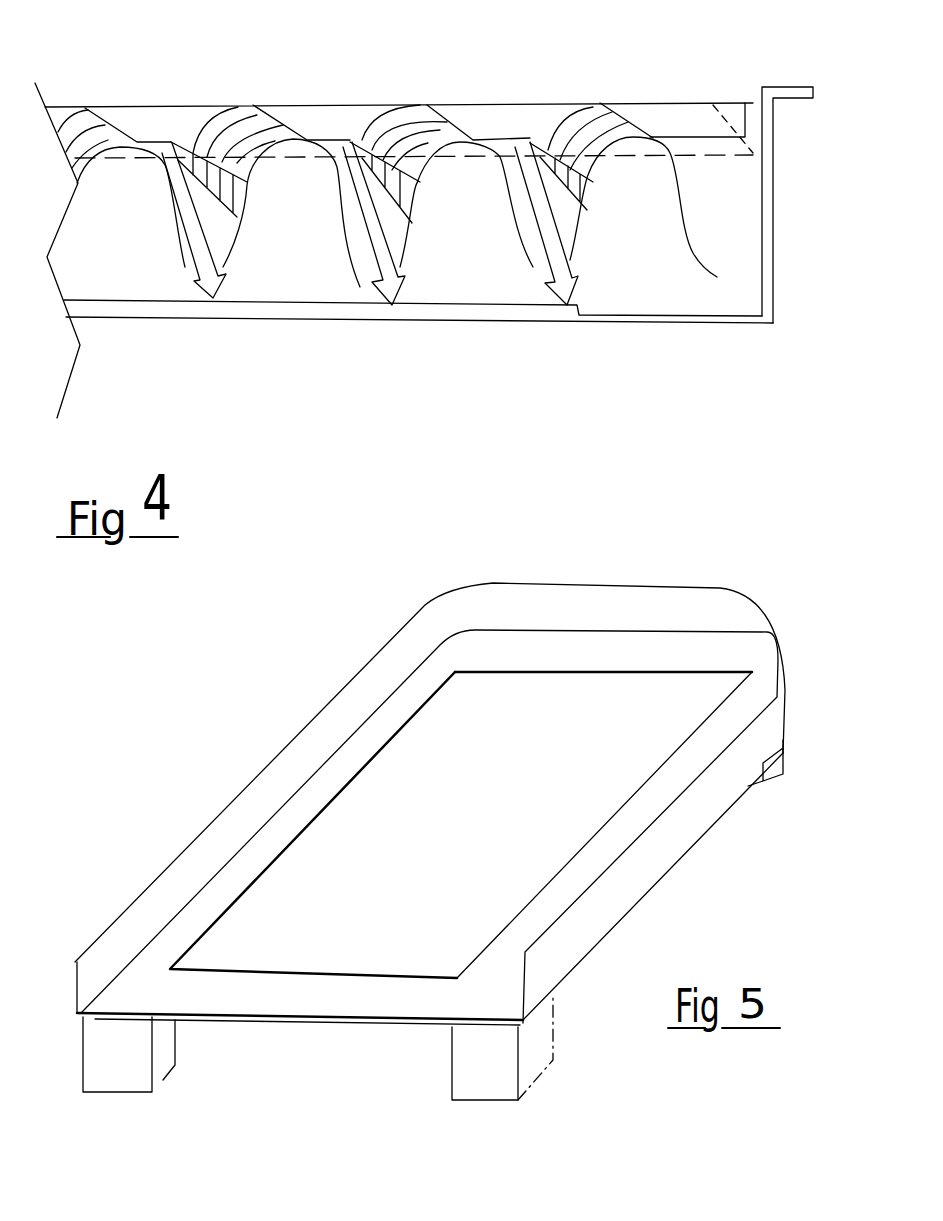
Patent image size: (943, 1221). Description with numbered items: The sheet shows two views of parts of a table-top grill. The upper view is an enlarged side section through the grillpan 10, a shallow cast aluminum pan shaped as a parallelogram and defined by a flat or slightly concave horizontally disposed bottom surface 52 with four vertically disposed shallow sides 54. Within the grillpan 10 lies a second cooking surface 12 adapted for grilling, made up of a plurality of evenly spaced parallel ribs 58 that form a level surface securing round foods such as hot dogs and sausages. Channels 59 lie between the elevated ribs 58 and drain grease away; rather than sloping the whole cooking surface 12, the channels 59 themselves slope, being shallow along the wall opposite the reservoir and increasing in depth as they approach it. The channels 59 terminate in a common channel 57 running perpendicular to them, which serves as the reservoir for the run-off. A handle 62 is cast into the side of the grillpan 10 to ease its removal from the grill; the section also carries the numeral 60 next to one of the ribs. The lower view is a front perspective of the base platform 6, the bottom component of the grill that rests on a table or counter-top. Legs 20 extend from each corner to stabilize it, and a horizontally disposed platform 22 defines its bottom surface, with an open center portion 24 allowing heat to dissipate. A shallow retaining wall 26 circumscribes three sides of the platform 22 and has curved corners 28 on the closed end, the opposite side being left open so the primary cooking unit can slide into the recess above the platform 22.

In FIG. 4, the grillpan 10 is at (160, 360).
In FIG. 4, the cooking surface 12 is at (672, 127).
In FIG. 4, the bottom surface 52 is at (398, 322).
In FIG. 4, the sides 54 is at (497, 128).
In FIG. 4, the common channel 57 is at (224, 300).
In FIG. 4, the ribs 58 is at (473, 140).
In FIG. 4, the channels 59 is at (368, 208).
In FIG. 4, the rib 60 is at (677, 295).
In FIG. 4, the handle 62 is at (790, 93).
In FIG. 5, the base platform 6 is at (453, 814).
In FIG. 5, the legs 20 is at (533, 1055).
In FIG. 5, the platform 22 is at (248, 988).
In FIG. 5, the center portion 24 is at (520, 772).
In FIG. 5, the retaining wall 26 is at (548, 617).
In FIG. 5, the curved corners 28 is at (763, 615).